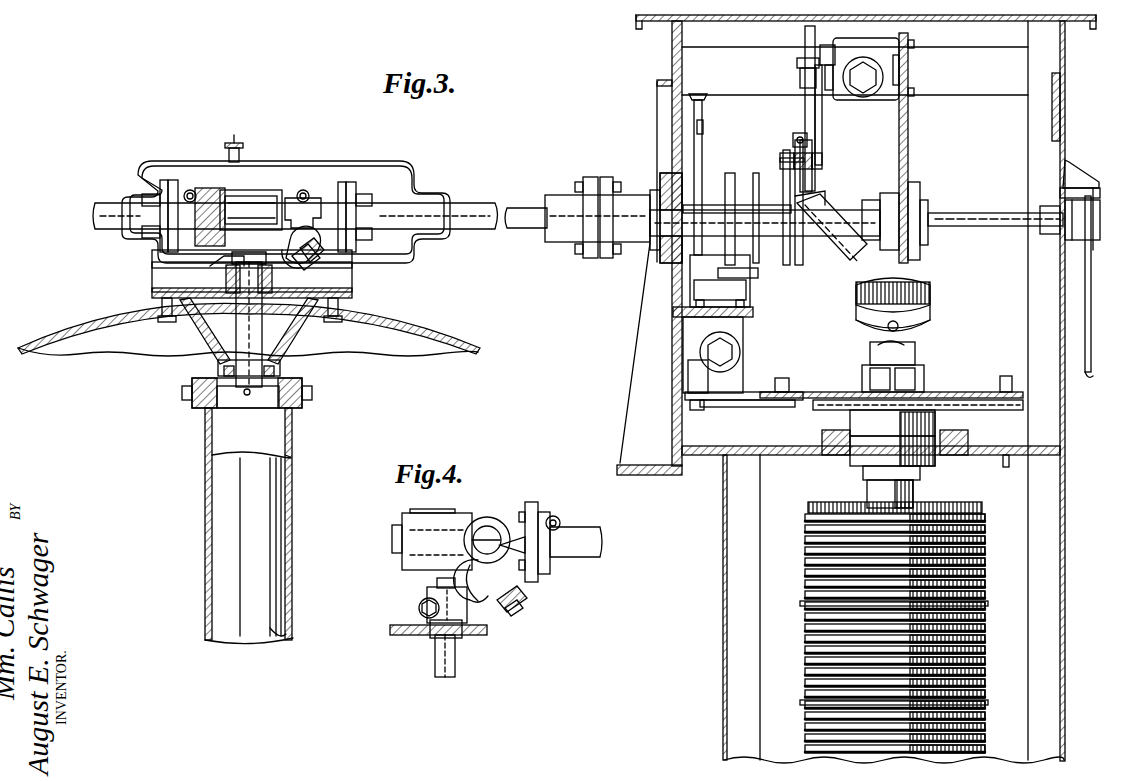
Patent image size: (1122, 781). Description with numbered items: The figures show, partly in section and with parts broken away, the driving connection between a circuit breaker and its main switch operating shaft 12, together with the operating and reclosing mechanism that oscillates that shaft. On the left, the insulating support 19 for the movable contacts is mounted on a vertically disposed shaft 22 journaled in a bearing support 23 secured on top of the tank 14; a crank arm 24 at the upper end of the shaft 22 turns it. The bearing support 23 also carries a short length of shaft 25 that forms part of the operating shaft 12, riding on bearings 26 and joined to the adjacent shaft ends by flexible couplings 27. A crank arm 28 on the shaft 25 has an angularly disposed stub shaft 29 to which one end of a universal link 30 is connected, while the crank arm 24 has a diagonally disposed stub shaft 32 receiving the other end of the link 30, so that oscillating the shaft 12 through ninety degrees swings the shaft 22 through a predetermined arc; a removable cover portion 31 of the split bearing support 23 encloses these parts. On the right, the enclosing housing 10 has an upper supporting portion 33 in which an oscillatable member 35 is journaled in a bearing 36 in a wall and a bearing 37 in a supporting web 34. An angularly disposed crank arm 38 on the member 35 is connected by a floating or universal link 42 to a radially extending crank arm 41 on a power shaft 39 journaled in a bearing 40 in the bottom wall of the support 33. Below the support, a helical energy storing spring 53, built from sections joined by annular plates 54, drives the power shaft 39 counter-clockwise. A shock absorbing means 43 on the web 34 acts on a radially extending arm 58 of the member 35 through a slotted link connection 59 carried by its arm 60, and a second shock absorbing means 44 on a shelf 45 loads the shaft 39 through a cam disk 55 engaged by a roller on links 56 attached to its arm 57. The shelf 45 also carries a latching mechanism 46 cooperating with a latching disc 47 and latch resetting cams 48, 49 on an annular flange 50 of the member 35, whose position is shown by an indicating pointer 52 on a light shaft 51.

In FIG. 3, the enclosing housing 10 is at (723, 538).
In FIG. 3, the main switch operating shaft 12 is at (106, 202).
In FIG. 4, the main switch operating shaft 12 is at (590, 535).
In FIG. 3, the tank 14 is at (440, 332).
In FIG. 3, the insulating support 19 is at (275, 483).
In FIG. 3, the vertically disposed shaft 22 is at (234, 337).
In FIG. 4, the vertically disposed shaft 22 is at (440, 666).
In FIG. 3, the bearing support 23 is at (282, 338).
In FIG. 4, the bearing support 23 is at (480, 634).
In FIG. 3, the crank arm 24 is at (213, 273).
In FIG. 4, the crank arm 24 is at (438, 600).
In FIG. 3, the short length of shaft 25 is at (254, 197).
In FIG. 4, the short length of shaft 25 is at (395, 545).
In FIG. 3, the bearings 26 is at (219, 194).
In FIG. 4, the bearings 26 is at (408, 517).
In FIG. 3, the flexible couplings 27 is at (170, 179).
In FIG. 4, the flexible couplings 27 is at (538, 506).
In FIG. 3, the crank arm 28 is at (367, 263).
In FIG. 4, the crank arm 28 is at (487, 520).
In FIG. 3, the angularly disposed stub shaft 29 is at (313, 267).
In FIG. 4, the angularly disposed stub shaft 29 is at (550, 560).
In FIG. 3, the universal link 30 is at (281, 256).
In FIG. 4, the universal link 30 is at (486, 616).
In FIG. 3, the cover portion 31 is at (389, 170).
In FIG. 4, the diagonally disposed stub shaft 32 is at (515, 606).
In FIG. 3, the upper supporting portion 33 is at (674, 389).
In FIG. 3, the supporting web 34 is at (910, 136).
In FIG. 3, the oscillatable member 35 is at (758, 202).
In FIG. 3, the bearing 36 is at (666, 194).
In FIG. 3, the bearing 37 is at (918, 191).
In FIG. 3, the angularly disposed crank arm 38 is at (840, 267).
In FIG. 3, the power shaft 39 is at (915, 490).
In FIG. 3, the bearing 40 is at (855, 452).
In FIG. 3, the radially extending crank arm 41 is at (915, 350).
In FIG. 3, the floating or universal link 42 is at (869, 318).
In FIG. 3, the fluid pressure check or shock absorbing means 43 is at (862, 36).
In FIG. 3, the second check or shock absorbing means 44 is at (742, 362).
In FIG. 3, the shelf 45 is at (751, 316).
In FIG. 3, the latching mechanism 46 is at (749, 288).
In FIG. 3, the latching disc 47 is at (700, 160).
In FIG. 3, the latch resetting cam 48 is at (737, 255).
In FIG. 3, the latch resetting cam 49 is at (738, 276).
In FIG. 3, the annular flange 50 is at (735, 208).
In FIG. 3, the light shaft 51 is at (980, 218).
In FIG. 3, the indicating pointer 52 is at (1094, 381).
In FIG. 3, the helical energy storing spring 53 is at (812, 548).
In FIG. 3, the annular plates 54 is at (988, 604).
In FIG. 3, the cam disk 55 is at (830, 402).
In FIG. 3, the links 56 is at (818, 392).
In FIG. 3, the arm 57 is at (730, 400).
In FIG. 3, the radially extending arm 58 is at (818, 143).
In FIG. 3, the slotted link connection 59 is at (818, 116).
In FIG. 3, the arm 60 is at (814, 24).